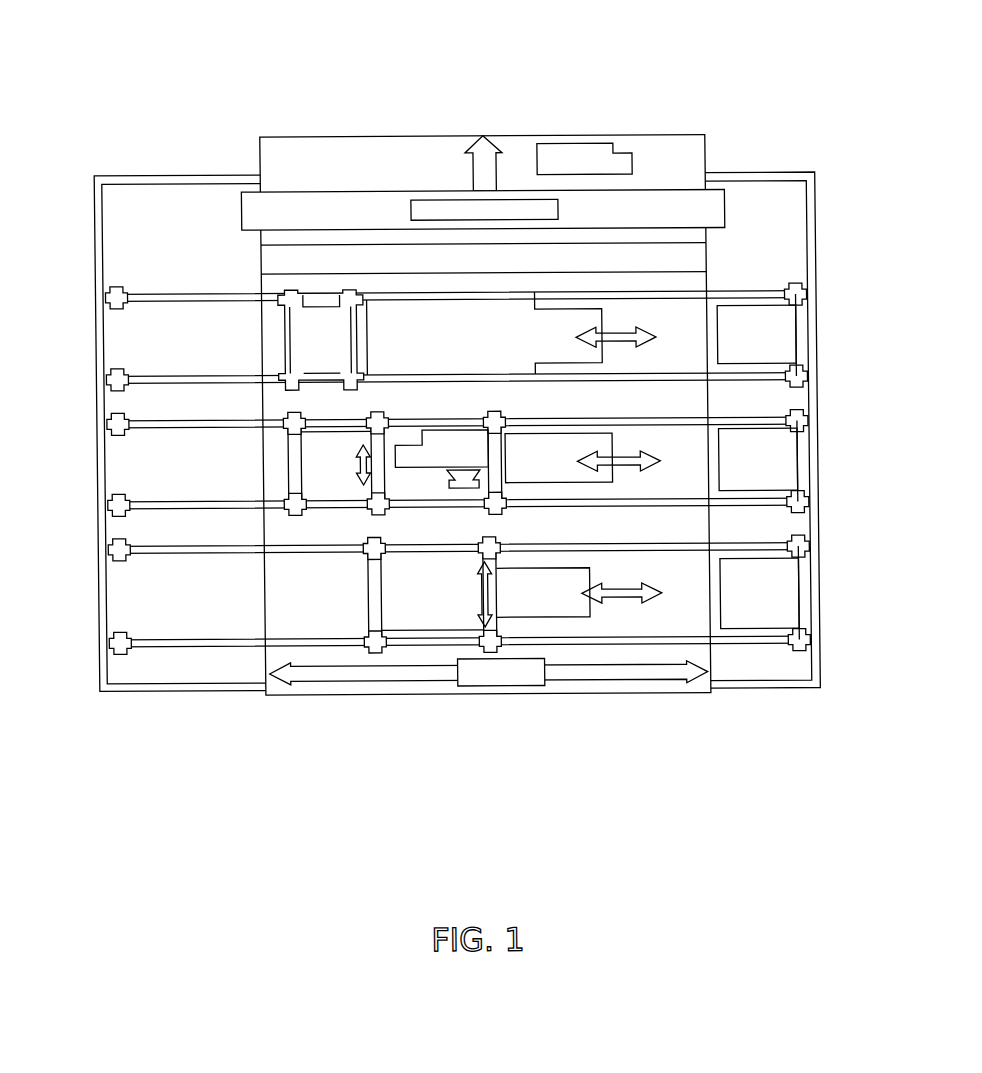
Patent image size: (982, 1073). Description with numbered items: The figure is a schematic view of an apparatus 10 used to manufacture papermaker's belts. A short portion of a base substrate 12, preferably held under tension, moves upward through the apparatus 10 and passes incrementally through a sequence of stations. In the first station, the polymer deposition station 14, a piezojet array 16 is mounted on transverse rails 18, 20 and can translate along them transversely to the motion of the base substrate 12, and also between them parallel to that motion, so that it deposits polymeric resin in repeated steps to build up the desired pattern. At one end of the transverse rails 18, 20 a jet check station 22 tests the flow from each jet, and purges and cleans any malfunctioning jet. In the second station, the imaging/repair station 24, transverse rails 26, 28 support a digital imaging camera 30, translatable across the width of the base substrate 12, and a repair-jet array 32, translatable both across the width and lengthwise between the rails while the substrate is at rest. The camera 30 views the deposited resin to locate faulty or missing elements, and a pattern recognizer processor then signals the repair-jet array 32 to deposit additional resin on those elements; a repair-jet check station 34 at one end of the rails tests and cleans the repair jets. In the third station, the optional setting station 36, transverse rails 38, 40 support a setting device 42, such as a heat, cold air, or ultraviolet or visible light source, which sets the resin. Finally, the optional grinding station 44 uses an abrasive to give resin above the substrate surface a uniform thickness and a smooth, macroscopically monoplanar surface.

The apparatus 10 is at (734, 88).
The base substrate 12 is at (331, 688).
The polymer deposition station 14 is at (826, 539).
The piezojet array 16 is at (431, 600).
The transverse rail 18 is at (181, 642).
The transverse rail 20 is at (184, 548).
The jet check station 22 is at (763, 602).
The imaging/repair station 24 is at (826, 415).
The transverse rail 26 is at (169, 501).
The transverse rail 28 is at (167, 421).
The digital imaging camera 30 is at (468, 480).
The repair-jet array 32 is at (320, 477).
The repair-jet check station 34 is at (762, 444).
The setting station 36 is at (826, 285).
The transverse rail 38 is at (168, 376).
The transverse rail 40 is at (202, 292).
The setting device 42 is at (301, 335).
The grinding station 44 is at (690, 213).